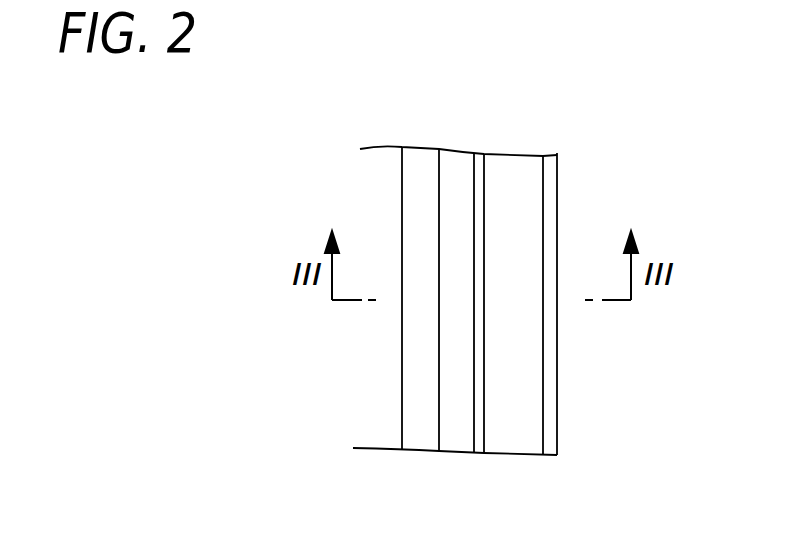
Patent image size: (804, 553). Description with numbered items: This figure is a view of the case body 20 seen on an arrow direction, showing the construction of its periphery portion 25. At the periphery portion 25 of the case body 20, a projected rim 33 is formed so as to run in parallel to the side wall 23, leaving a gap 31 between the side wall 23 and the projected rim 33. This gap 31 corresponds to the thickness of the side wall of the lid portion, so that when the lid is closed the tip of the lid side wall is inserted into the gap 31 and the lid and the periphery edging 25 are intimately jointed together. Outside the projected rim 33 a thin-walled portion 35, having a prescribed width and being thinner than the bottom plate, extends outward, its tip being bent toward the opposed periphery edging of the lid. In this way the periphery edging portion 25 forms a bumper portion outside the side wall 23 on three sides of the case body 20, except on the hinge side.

The case body 20 is at (491, 292).
The side wall 23 is at (412, 384).
The periphery portion 25 is at (472, 306).
The gap 31 is at (453, 438).
The projected rim 33 is at (475, 448).
The thin-walled portion 35 is at (510, 430).